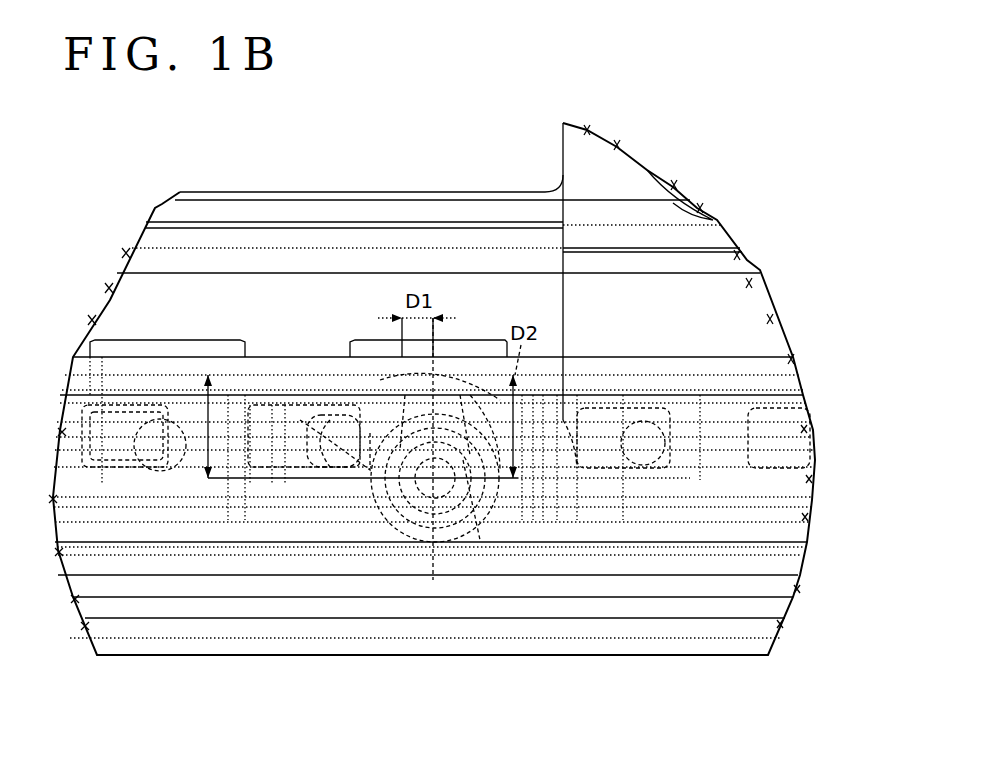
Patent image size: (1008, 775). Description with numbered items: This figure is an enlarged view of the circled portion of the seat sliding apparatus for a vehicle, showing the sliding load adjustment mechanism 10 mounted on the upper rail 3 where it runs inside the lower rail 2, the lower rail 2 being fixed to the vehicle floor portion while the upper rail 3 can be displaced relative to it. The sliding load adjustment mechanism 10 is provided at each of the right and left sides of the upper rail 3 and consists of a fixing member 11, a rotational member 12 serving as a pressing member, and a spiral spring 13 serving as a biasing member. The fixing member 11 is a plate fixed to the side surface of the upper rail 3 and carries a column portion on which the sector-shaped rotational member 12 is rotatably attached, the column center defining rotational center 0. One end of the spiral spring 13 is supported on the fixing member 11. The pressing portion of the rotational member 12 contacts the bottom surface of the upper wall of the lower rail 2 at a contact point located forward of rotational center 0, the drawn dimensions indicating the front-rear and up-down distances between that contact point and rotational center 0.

The upper rail 3 is at (108, 305).
The sliding load adjustment mechanism 10 is at (307, 308).
The rotational member 12 is at (341, 357).
The lower rail 2 is at (636, 357).
The spiral spring 13 is at (325, 470).
The center axis 0 is at (470, 540).
The fixing member 11 is at (647, 483).